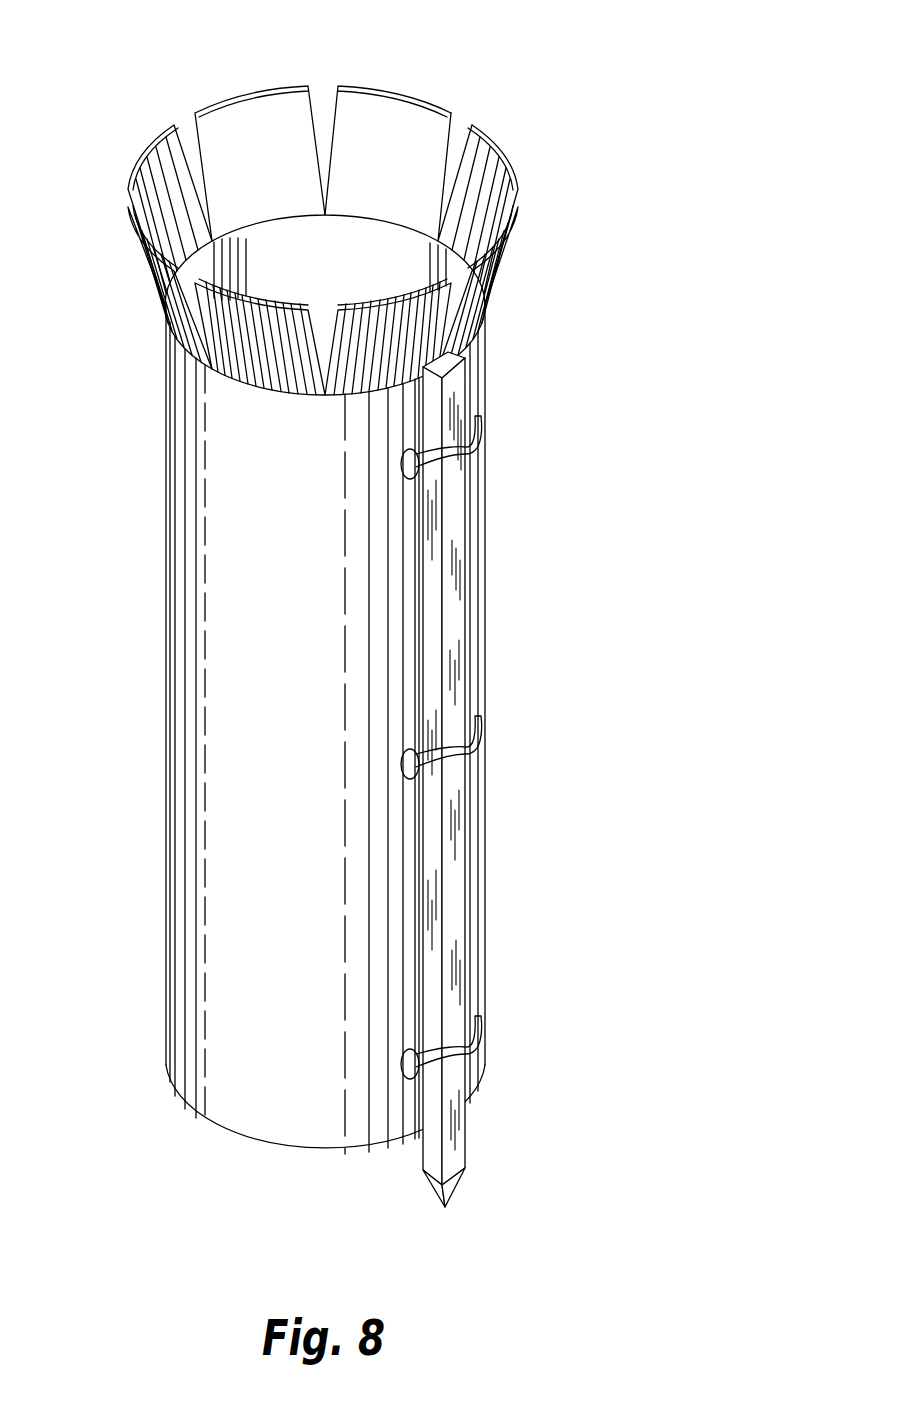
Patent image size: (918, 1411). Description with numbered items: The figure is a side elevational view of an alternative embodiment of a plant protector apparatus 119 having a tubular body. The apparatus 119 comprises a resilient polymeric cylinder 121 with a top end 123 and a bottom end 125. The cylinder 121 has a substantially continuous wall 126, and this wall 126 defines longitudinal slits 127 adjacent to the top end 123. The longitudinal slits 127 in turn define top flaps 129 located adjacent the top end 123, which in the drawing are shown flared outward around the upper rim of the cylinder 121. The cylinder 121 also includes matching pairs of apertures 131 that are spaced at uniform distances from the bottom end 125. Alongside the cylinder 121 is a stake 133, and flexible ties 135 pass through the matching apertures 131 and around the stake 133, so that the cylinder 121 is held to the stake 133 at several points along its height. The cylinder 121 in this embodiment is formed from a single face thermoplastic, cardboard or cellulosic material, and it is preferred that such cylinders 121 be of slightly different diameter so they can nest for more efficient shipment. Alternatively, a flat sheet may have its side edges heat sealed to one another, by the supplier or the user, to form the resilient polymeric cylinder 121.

The plant protector apparatus 119 is at (600, 407).
The resilient polymeric cylinder 121 is at (165, 641).
The top end 123 is at (227, 99).
The bottom end 125 is at (245, 1145).
The wall 126 is at (423, 101).
The longitudinal slits 127 is at (453, 123).
The top flaps 129 is at (487, 152).
The apertures 131 is at (419, 468).
The stake 133 is at (462, 557).
The flexible ties 135 is at (458, 456).